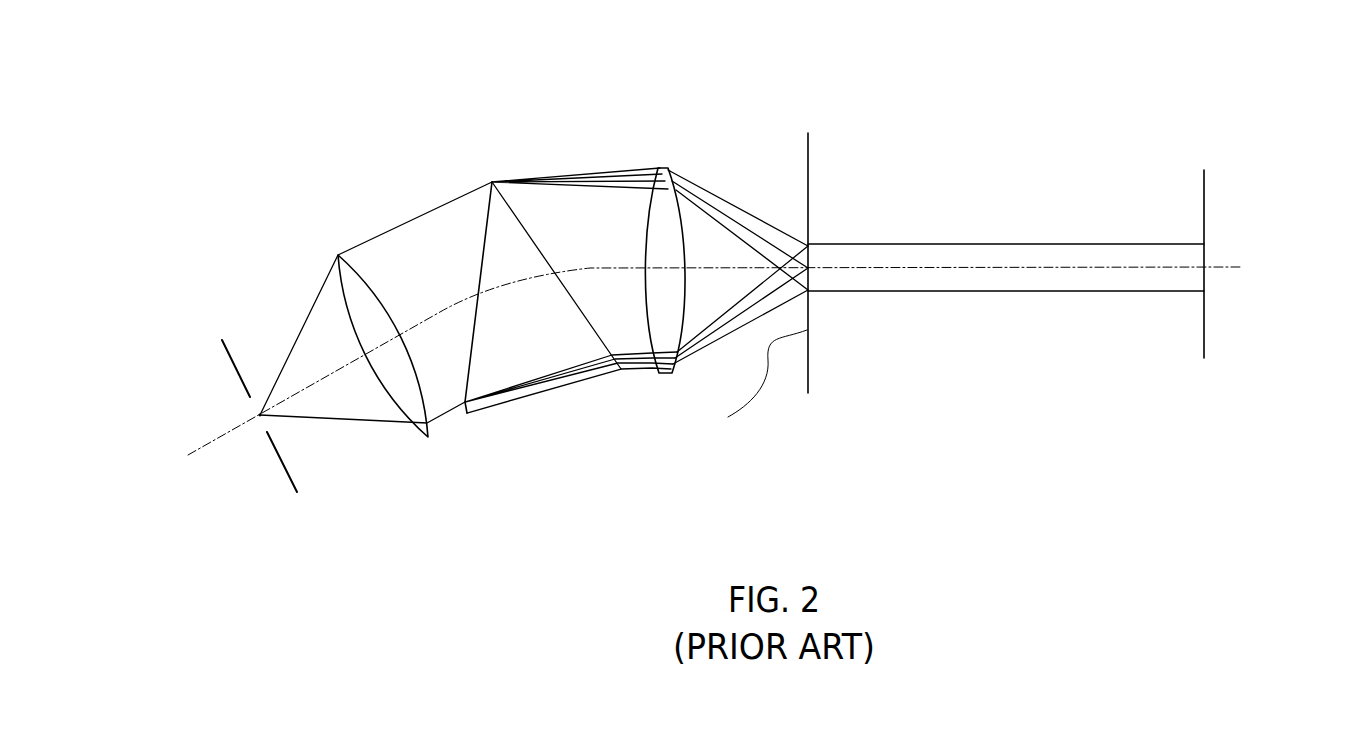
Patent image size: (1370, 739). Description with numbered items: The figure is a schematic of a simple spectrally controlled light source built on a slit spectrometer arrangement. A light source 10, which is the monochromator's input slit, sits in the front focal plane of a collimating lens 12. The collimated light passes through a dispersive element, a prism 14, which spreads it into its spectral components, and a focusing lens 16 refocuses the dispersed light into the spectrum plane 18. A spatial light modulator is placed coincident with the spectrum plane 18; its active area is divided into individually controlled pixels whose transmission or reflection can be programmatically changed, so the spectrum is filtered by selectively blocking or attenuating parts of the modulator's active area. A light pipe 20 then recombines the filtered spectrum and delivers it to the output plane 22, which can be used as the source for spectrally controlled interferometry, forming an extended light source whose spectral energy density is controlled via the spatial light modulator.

The light source 10 is at (253, 407).
The collimating lens 12 is at (336, 252).
The prism 14 is at (492, 182).
The focusing lens 16 is at (670, 166).
The spectrum plane 18 is at (810, 313).
The light pipe 20 is at (930, 245).
The output plane 22 is at (1205, 252).